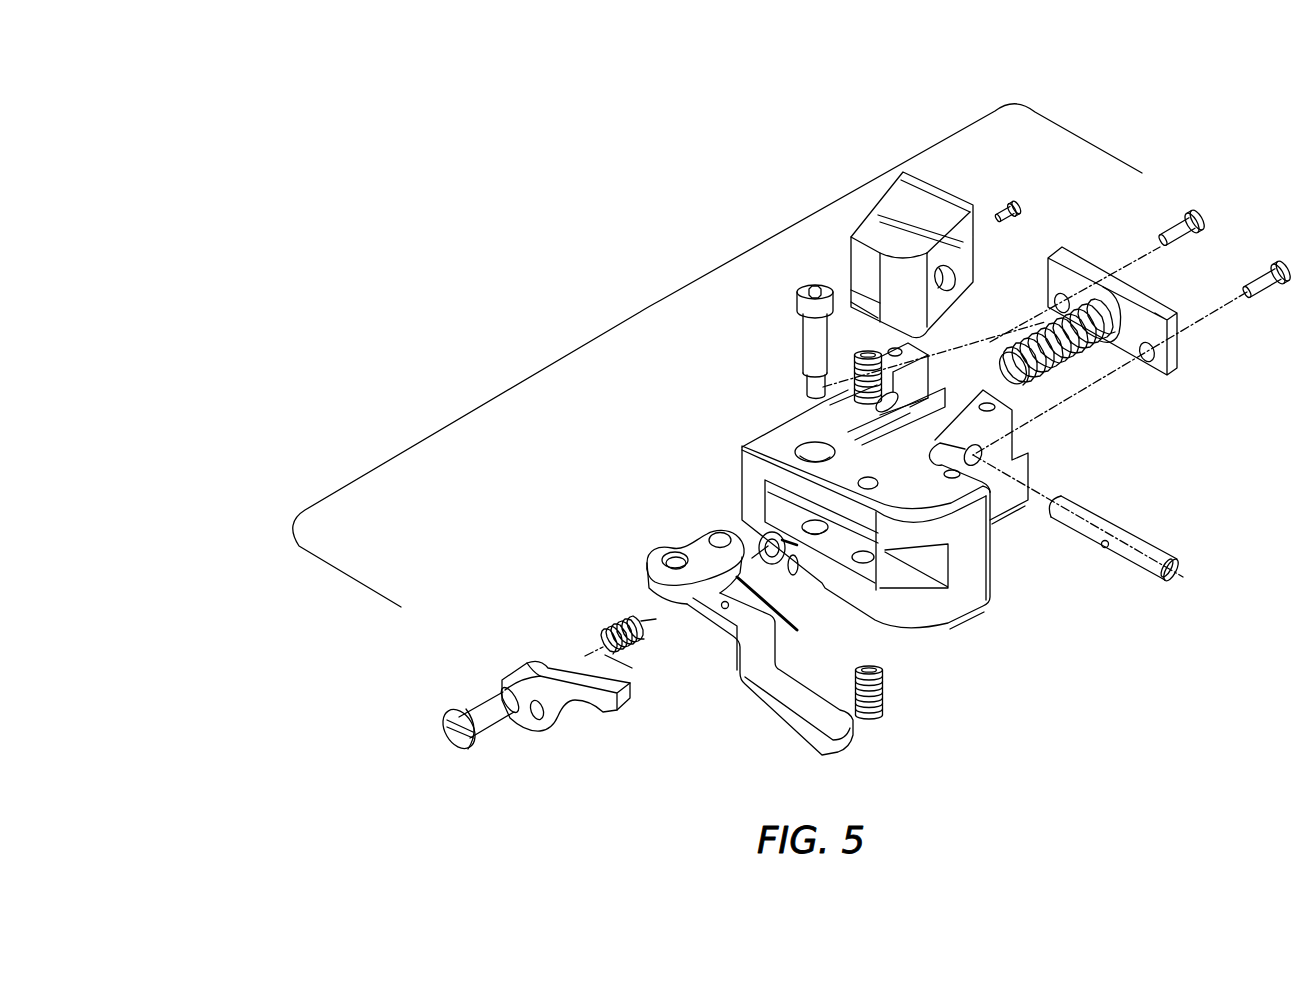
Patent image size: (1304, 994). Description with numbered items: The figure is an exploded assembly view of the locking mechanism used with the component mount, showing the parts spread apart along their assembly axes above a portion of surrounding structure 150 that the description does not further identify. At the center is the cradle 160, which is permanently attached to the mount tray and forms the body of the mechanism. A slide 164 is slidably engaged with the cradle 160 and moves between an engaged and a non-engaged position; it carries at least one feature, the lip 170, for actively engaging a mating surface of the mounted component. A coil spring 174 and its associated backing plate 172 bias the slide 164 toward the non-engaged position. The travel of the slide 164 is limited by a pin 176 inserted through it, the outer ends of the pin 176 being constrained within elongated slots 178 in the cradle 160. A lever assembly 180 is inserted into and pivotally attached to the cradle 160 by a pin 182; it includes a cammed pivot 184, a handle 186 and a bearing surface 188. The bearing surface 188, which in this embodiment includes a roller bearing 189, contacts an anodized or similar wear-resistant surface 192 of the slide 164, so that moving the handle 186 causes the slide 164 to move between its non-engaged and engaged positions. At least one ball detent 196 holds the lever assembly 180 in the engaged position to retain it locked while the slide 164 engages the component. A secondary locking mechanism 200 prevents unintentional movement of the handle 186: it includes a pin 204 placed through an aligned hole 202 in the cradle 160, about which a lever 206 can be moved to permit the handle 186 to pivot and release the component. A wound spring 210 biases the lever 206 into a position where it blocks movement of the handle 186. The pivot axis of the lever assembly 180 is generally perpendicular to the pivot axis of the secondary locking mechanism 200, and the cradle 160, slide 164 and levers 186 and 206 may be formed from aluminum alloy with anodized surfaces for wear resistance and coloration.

The base plate 150 is at (645, 304).
The cradle 160 is at (776, 431).
The slide 164 is at (898, 206).
The lip 170 is at (950, 187).
The backing plate 172 is at (1135, 350).
The coil spring 174 is at (1063, 362).
The pin 176 is at (1082, 537).
The elongated slots 178 is at (971, 450).
The lever assembly 180 is at (725, 620).
The pin 182 is at (814, 345).
The cammed pivot 184 is at (683, 567).
The handle 186 is at (800, 695).
The bearing surface 188 is at (719, 508).
The roller bearing 189 is at (782, 617).
The surface 192 is at (876, 276).
The ball detent 196 is at (852, 385).
The secondary locking mechanism 200 is at (565, 715).
The aligned hole 202 is at (770, 566).
The pin 204 is at (478, 700).
The lever 206 is at (532, 666).
The wound spring 210 is at (617, 615).